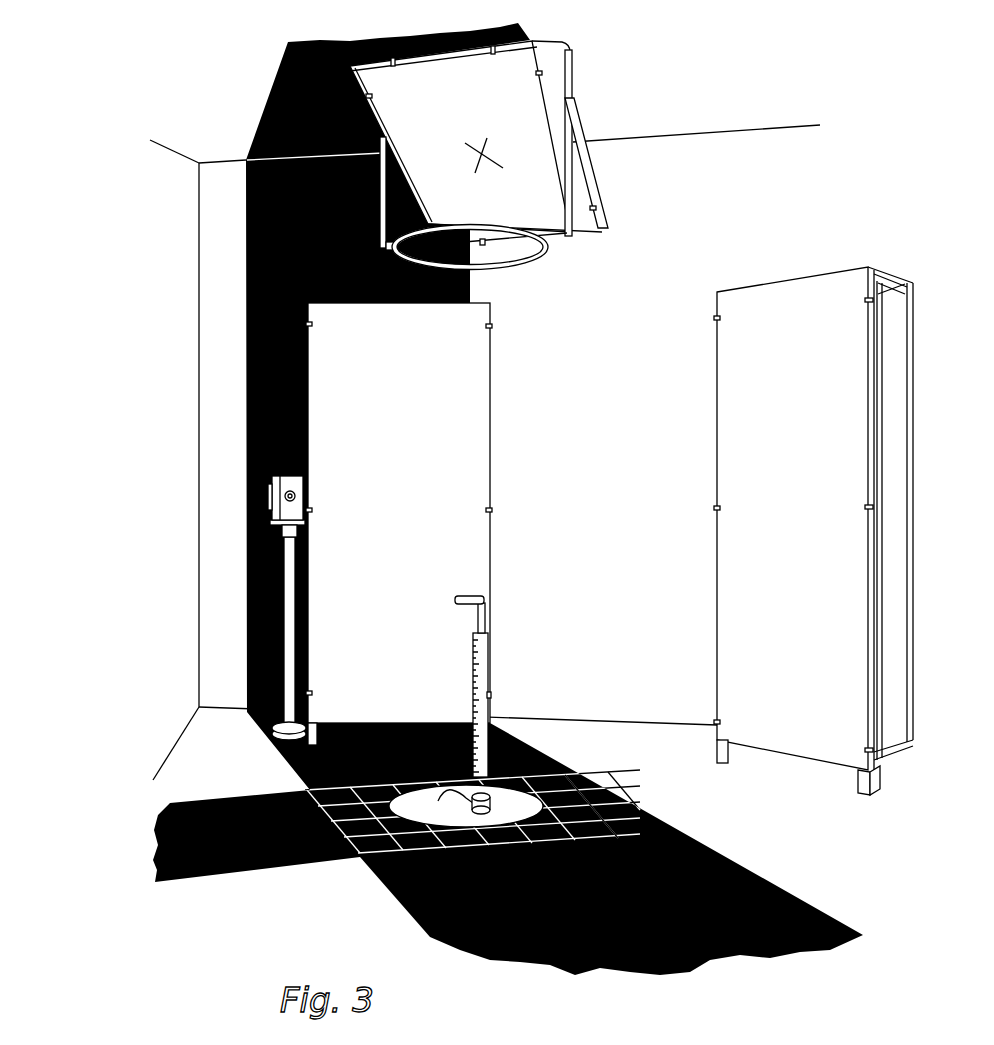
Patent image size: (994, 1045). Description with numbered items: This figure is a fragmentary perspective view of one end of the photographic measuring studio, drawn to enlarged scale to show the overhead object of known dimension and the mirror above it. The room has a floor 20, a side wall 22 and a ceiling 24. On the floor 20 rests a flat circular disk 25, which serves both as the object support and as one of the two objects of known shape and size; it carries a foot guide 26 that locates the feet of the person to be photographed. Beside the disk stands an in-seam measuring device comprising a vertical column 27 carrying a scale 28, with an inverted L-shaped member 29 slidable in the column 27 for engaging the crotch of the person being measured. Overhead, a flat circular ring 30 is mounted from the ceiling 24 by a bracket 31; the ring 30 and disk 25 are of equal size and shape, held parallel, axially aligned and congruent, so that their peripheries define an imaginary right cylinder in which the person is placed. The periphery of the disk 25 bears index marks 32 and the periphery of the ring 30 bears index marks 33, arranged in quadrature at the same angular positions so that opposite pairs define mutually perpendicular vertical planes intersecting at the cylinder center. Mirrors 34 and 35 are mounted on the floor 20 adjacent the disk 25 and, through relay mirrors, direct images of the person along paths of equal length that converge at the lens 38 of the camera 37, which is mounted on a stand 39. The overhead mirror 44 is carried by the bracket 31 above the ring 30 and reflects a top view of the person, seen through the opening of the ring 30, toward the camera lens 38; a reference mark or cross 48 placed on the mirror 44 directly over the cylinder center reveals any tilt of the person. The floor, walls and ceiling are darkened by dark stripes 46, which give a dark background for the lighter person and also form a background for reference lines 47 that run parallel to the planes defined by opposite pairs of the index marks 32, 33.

The floor 20 is at (459, 762).
The side wall 22 is at (266, 460).
The ceiling 24 is at (696, 115).
The flat circular disk 25 is at (466, 806).
The foot guide 26 is at (440, 798).
The vertical column 27 is at (537, 756).
The scale 28 is at (482, 672).
The inverted L-shaped member 29 is at (484, 620).
The flat circular ring 30 is at (528, 262).
The bracket 31 is at (575, 176).
The index marks 32 is at (425, 822).
The index marks 33 is at (485, 222).
The mirror 34 is at (729, 421).
The mirror 35 is at (399, 524).
The camera 37 is at (297, 512).
The lens 38 is at (305, 480).
The stand 39 is at (290, 600).
The overhead mirror 44 is at (476, 145).
The dark stripes 46 is at (271, 91).
The reference lines 47 is at (603, 797).
The reference mark 48 is at (487, 138).